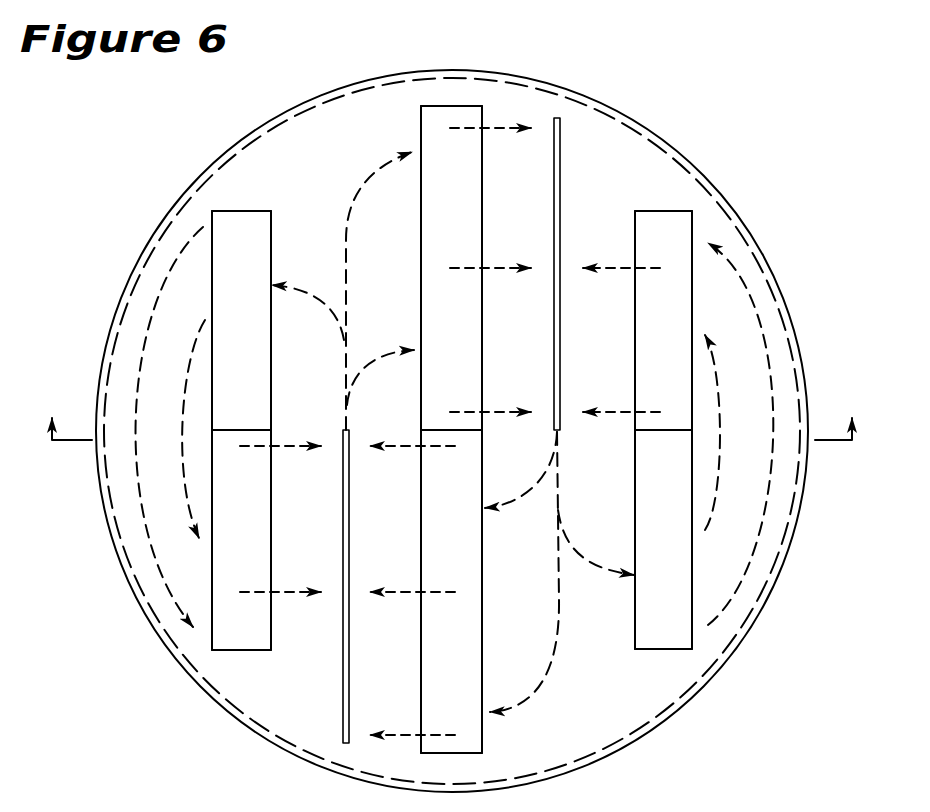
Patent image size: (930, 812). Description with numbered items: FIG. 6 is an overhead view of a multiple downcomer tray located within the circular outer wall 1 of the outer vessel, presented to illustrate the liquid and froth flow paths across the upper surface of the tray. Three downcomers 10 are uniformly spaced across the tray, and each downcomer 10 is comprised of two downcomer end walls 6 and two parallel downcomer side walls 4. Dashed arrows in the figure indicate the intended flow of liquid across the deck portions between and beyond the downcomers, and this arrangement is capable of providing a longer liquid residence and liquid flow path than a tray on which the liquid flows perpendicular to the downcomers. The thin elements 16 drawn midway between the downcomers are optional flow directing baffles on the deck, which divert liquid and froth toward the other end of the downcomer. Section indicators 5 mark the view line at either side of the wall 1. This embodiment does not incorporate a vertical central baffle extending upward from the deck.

The circular outer wall 1 is at (756, 240).
The downcomer side wall 4 is at (272, 348).
The section line 5- 5 is at (448, 409).
The downcomer end wall 6 is at (242, 651).
The downcomer 10 is at (242, 210).
The baffle plate 16 is at (555, 322).